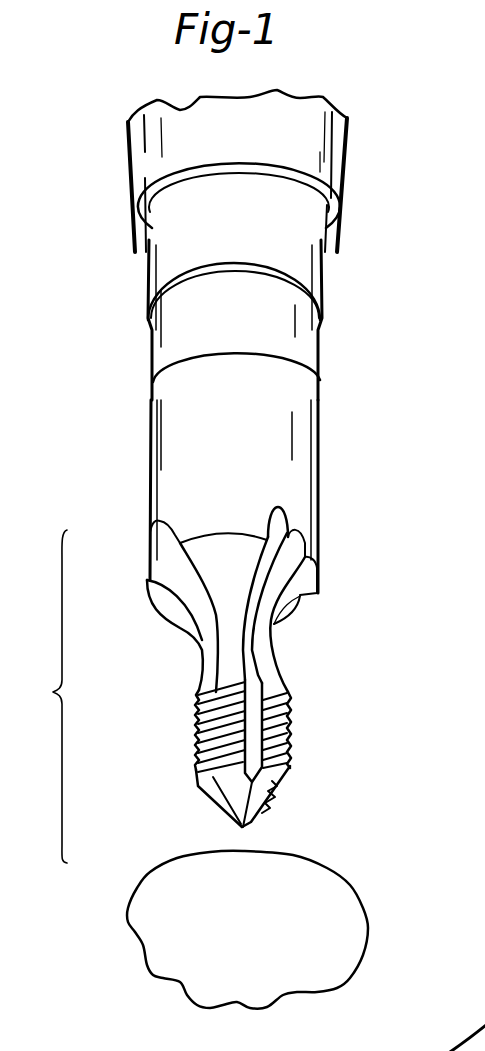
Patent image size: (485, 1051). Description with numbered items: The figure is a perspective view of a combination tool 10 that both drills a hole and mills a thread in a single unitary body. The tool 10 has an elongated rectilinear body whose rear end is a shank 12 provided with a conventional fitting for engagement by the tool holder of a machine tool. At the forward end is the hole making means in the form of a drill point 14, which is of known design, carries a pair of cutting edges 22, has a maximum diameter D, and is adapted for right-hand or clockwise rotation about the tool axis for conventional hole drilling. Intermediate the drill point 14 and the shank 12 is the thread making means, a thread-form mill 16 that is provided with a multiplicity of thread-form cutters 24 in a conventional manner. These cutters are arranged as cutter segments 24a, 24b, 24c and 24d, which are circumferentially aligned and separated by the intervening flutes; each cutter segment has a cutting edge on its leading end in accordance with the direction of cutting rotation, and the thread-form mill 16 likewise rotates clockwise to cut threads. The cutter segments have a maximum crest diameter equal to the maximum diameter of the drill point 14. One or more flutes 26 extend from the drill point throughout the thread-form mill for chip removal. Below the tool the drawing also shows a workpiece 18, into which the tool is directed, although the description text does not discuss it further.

The combination tool 10 is at (375, 413).
The shank 12 is at (142, 296).
The drill point 14 is at (272, 829).
The thread-form mill 16 is at (306, 715).
The workpiece 18 is at (355, 888).
The cutting edges 22 is at (233, 798).
The thread-form cutters 24 is at (287, 749).
The cutter segment 24a is at (193, 713).
The cutter segment 24b is at (192, 768).
The cutter segment 24c is at (276, 778).
The cutter segment 24d is at (288, 742).
The flutes 26 is at (272, 680).